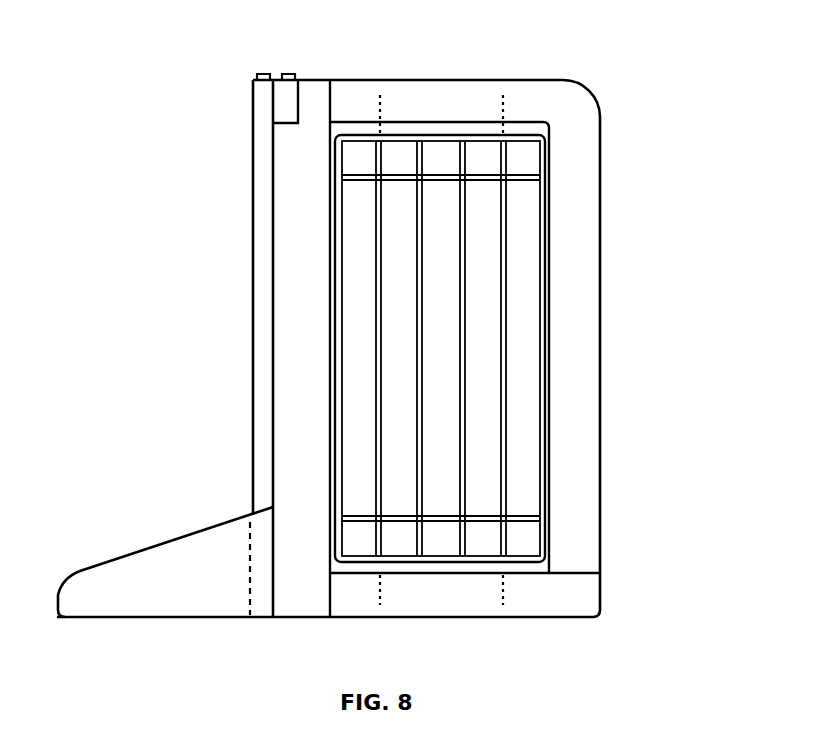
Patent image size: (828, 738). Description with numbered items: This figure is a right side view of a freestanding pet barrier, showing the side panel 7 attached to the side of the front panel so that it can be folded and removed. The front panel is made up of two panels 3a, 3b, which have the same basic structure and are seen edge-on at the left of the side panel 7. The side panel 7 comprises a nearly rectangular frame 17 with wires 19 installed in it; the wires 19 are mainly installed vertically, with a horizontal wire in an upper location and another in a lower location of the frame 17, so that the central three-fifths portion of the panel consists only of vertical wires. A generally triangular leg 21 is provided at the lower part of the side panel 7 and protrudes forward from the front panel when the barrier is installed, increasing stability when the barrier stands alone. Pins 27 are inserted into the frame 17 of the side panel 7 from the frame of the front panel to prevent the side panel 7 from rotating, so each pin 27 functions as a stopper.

The side panel 7 is at (624, 239).
The panel 3a is at (250, 211).
The panel 3b is at (284, 98).
The pin 27 is at (262, 72).
The frame 17 is at (600, 340).
The wires 19 is at (500, 424).
The leg 21 is at (156, 543).